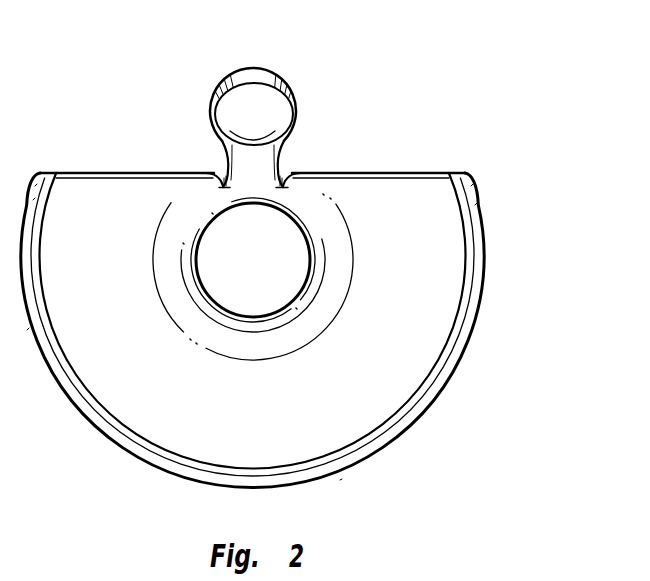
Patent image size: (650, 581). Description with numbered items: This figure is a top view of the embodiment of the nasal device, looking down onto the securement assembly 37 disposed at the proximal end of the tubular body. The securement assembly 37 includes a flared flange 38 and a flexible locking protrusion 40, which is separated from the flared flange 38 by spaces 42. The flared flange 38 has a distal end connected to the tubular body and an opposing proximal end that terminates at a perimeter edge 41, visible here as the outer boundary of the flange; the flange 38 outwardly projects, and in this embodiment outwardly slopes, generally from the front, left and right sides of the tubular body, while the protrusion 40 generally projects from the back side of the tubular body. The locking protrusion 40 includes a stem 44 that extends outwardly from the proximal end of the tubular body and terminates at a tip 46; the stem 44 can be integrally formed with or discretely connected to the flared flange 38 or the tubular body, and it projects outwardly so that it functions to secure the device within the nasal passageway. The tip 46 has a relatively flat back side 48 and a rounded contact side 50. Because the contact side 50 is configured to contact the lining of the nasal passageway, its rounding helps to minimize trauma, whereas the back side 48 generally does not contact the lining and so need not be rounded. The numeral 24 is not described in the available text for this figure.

The central aperture 24 is at (233, 250).
The securement assembly 37 is at (322, 300).
The flared flange 38 is at (384, 405).
The flexible locking protrusion 40 is at (319, 107).
The perimeter edge 41 is at (462, 331).
The spaces 42 is at (205, 155).
The stem 44 is at (292, 166).
The tip 46 is at (298, 118).
The back side 48 is at (277, 70).
The contact side 50 is at (272, 102).